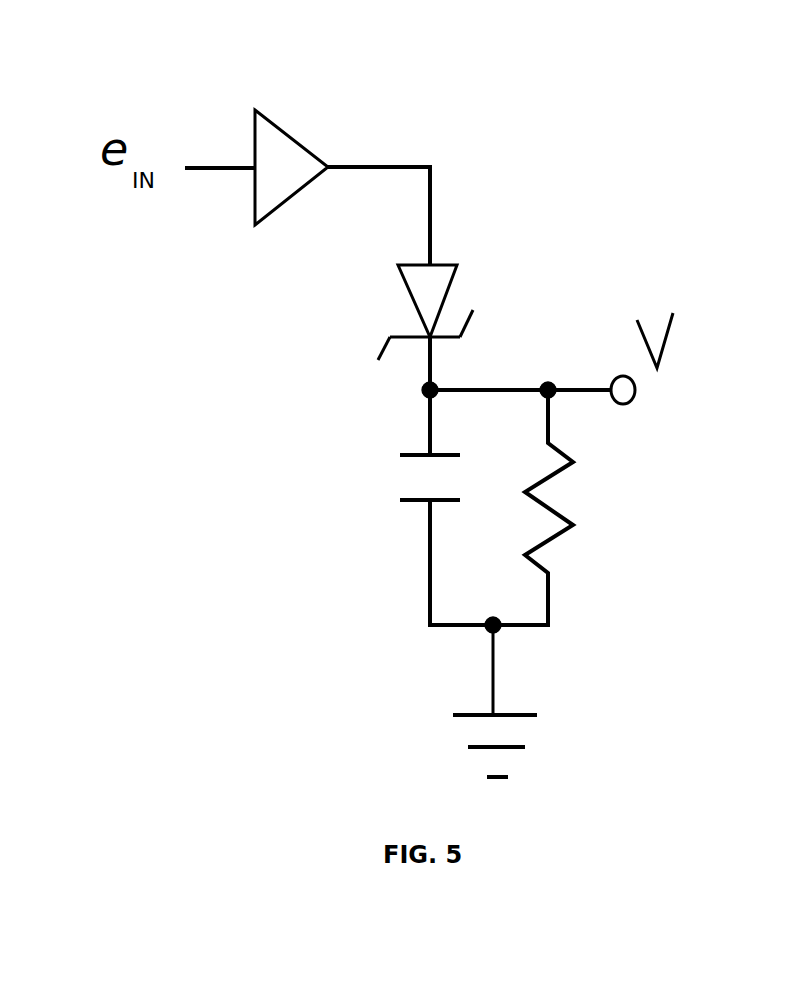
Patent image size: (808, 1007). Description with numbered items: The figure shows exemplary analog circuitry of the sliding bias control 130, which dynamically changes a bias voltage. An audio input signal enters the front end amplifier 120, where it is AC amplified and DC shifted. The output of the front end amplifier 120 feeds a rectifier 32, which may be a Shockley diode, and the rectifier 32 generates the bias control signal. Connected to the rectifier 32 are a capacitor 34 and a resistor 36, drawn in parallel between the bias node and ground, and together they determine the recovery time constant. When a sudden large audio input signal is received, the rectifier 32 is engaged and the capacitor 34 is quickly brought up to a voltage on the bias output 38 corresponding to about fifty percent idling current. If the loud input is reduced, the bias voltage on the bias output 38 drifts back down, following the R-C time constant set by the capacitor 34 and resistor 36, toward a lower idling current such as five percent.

The front end amplifier 120 is at (323, 140).
The rectifier 32 is at (477, 267).
The sliding bias control 130 is at (275, 370).
The capacitor 34 is at (370, 488).
The resistor 36 is at (572, 556).
The bias output 38 is at (637, 408).